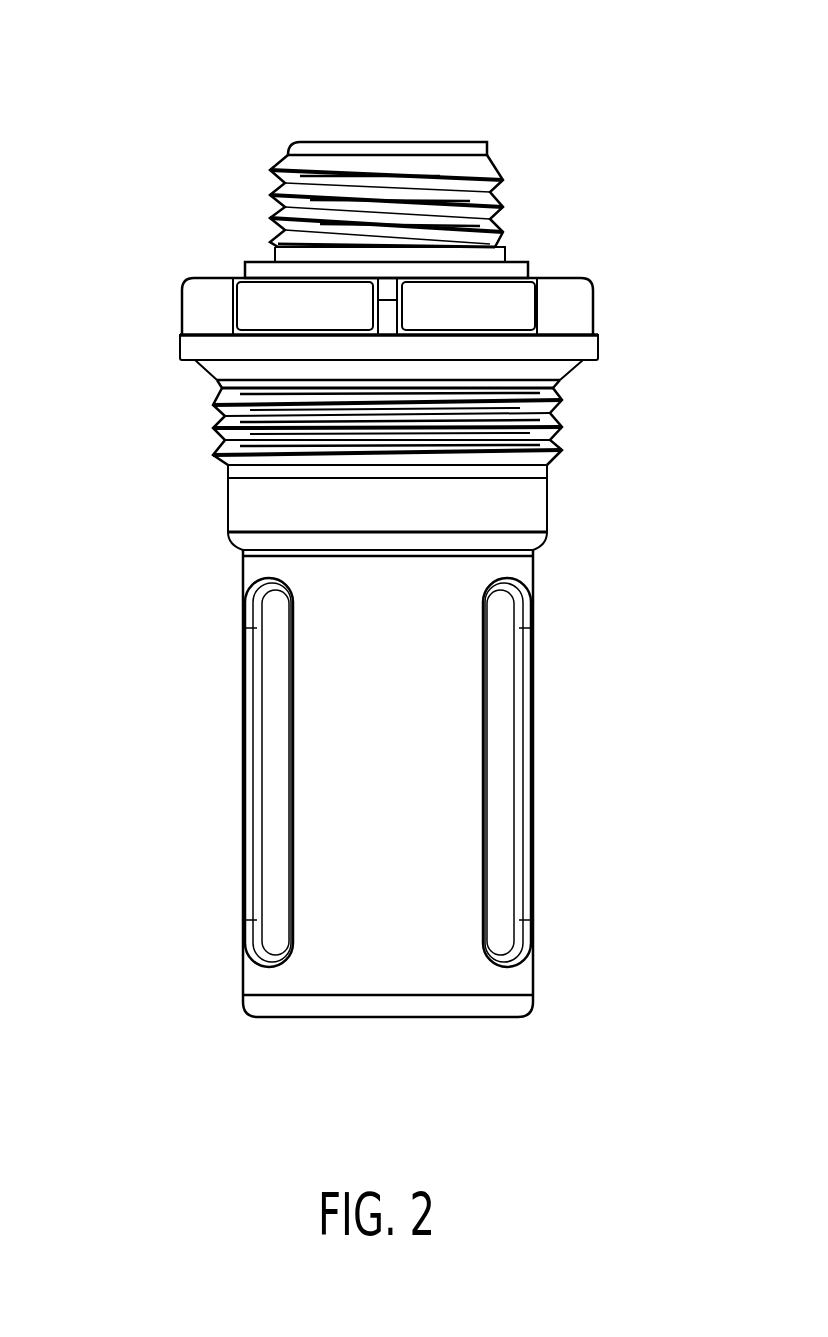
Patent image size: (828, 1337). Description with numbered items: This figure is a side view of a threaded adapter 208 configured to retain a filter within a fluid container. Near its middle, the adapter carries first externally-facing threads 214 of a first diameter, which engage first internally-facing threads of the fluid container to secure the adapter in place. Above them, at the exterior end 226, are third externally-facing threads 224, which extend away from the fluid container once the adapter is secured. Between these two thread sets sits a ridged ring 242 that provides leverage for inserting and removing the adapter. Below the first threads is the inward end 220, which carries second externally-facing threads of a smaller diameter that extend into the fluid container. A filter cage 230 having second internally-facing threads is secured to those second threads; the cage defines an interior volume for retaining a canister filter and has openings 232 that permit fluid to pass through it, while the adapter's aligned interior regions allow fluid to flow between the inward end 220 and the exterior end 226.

The threaded adapter 208 is at (371, 572).
The third externally-facing threads 224 is at (265, 196).
The exterior end 226 is at (570, 147).
The ridged ring 242 is at (160, 326).
The first externally-facing threads 214 is at (205, 431).
The inward end 220 is at (607, 393).
The filter cage 230 is at (382, 847).
The openings 232 is at (243, 862).